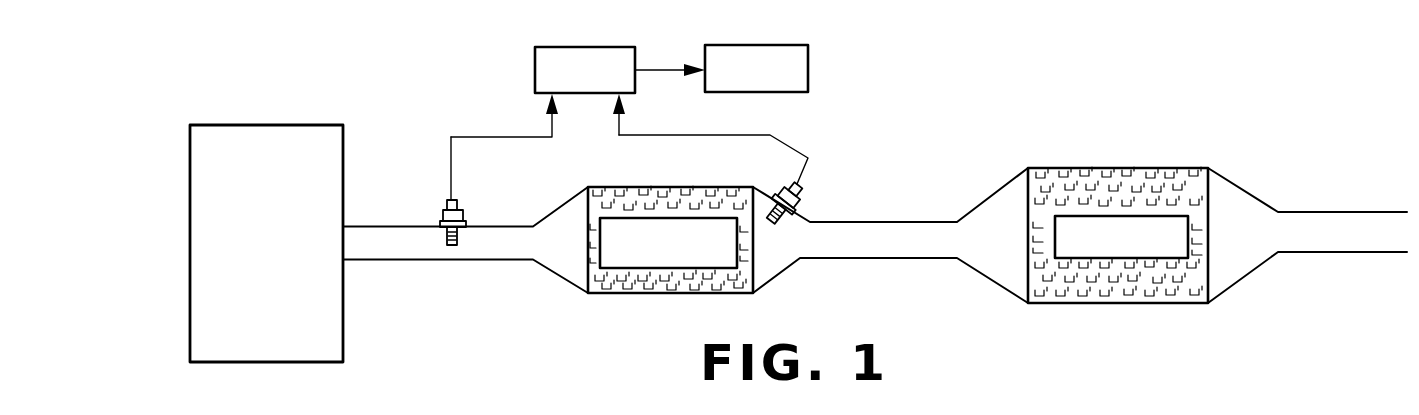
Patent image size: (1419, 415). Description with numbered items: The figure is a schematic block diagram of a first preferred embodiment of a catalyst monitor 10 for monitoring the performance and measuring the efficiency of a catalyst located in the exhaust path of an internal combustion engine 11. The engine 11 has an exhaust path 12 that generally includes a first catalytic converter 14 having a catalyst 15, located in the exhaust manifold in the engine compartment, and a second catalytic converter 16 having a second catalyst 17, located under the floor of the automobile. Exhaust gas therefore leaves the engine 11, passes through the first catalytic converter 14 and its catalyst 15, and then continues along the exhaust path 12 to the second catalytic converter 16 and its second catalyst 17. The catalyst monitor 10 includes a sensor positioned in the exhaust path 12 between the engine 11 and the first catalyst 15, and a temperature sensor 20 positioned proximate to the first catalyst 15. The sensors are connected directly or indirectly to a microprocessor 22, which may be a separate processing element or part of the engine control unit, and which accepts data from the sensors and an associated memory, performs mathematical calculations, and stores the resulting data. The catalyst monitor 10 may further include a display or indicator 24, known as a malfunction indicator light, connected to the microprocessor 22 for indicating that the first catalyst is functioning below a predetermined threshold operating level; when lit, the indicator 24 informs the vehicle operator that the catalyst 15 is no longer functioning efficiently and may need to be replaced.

The catalyst monitor 10 is at (450, 90).
The internal combustion engine 11 is at (332, 142).
The exhaust path 12 is at (370, 250).
The first catalytic converter 14 is at (757, 290).
The catalyst 15 is at (611, 262).
The second catalytic converter 16 is at (440, 220).
The second catalyst 17 is at (1119, 253).
The temperature sensor 20 is at (800, 200).
The microprocessor 22 is at (535, 75).
The display or indicator 24 is at (808, 58).